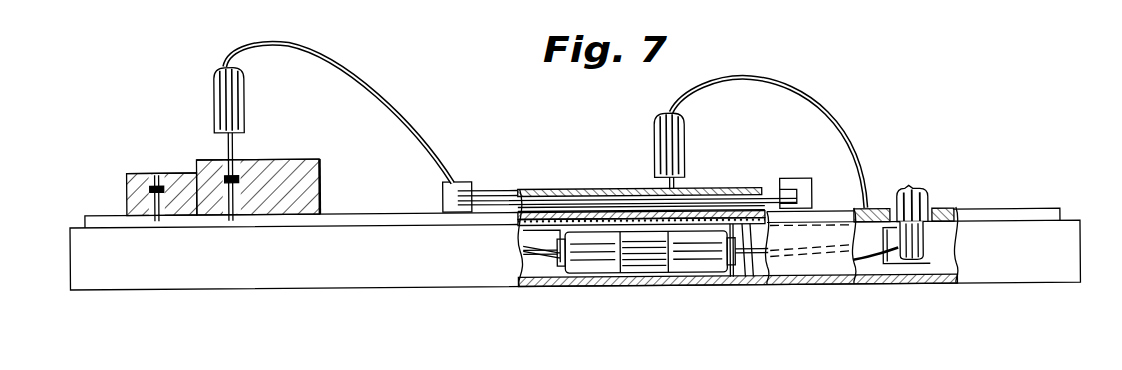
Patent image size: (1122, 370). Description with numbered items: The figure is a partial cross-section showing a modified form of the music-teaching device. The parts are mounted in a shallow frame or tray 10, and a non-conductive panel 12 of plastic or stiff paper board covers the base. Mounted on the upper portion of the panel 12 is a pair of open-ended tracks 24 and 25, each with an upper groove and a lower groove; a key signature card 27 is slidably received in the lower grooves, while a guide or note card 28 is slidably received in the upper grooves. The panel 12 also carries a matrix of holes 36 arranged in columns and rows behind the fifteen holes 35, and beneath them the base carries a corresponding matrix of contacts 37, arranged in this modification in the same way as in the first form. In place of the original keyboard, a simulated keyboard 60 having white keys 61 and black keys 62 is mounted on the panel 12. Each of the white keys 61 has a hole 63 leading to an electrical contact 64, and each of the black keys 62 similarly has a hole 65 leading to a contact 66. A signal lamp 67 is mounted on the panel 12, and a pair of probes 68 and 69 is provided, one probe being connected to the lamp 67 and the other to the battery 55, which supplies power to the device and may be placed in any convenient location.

The frame or tray 10 is at (943, 290).
The panel 12 is at (943, 217).
The track 24 is at (457, 190).
The track 25 is at (812, 196).
The key signature card 27 is at (747, 217).
The guide or note card 28 is at (717, 195).
The holes 35 is at (628, 194).
The matrix of holes 36 is at (565, 216).
The contacts 37 is at (746, 282).
The battery 55 is at (675, 267).
The simulated keyboard 60 is at (325, 159).
The white keys 61 is at (127, 174).
The black keys 62 is at (207, 160).
The hole 63 is at (160, 175).
The electrical contact 64 is at (150, 190).
The hole 65 is at (240, 158).
The contact 66 is at (270, 160).
The signal lamp 67 is at (911, 197).
The probe 68 is at (660, 118).
The probe 69 is at (246, 99).